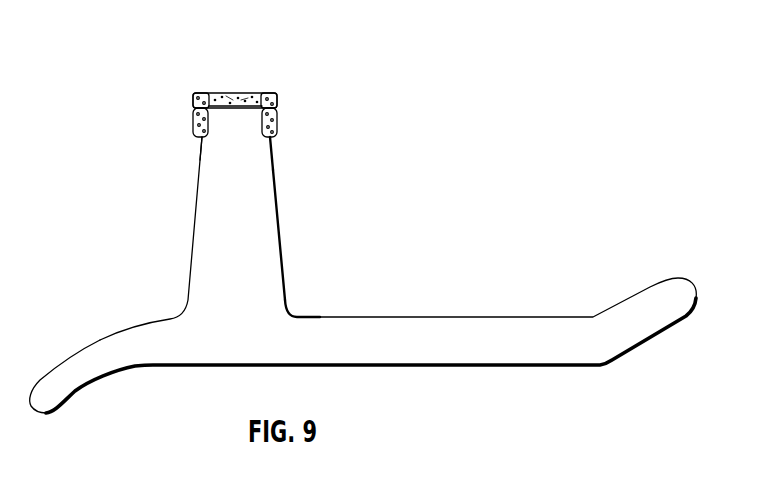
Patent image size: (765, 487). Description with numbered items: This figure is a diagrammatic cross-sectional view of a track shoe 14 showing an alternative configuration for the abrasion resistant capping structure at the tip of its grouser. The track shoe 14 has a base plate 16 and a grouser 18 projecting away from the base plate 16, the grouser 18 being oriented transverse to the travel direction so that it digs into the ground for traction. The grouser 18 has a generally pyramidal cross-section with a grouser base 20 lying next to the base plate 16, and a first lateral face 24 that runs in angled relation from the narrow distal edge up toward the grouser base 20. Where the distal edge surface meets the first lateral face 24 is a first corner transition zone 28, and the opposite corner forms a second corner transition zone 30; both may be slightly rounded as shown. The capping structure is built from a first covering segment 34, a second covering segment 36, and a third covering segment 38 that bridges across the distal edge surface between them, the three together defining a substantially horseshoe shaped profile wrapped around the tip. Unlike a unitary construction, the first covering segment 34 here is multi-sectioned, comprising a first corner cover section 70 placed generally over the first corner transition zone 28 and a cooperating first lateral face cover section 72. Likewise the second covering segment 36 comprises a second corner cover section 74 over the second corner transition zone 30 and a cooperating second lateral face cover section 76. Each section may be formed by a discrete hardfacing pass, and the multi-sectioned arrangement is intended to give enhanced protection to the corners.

The track shoe 14 is at (442, 197).
The base plate 16 is at (482, 310).
The grouser 18 is at (296, 280).
The grouser base 20 is at (291, 313).
The first lateral face 24 is at (283, 263).
The first corner transition zone 28 is at (260, 110).
The second corner transition zone 30 is at (210, 110).
The first covering segment 34 is at (288, 92).
The second covering segment 36 is at (190, 92).
The third covering segment 38 is at (232, 92).
The first corner cover section 70 is at (267, 92).
The first lateral face cover section 72 is at (277, 137).
The second corner cover section 74 is at (206, 92).
The second lateral face cover section 76 is at (195, 138).